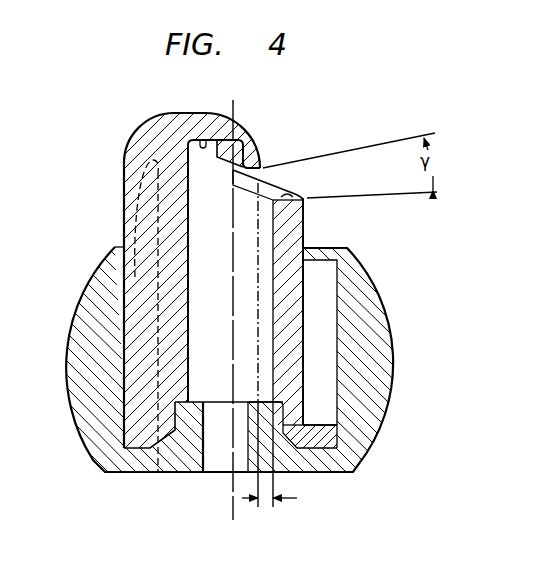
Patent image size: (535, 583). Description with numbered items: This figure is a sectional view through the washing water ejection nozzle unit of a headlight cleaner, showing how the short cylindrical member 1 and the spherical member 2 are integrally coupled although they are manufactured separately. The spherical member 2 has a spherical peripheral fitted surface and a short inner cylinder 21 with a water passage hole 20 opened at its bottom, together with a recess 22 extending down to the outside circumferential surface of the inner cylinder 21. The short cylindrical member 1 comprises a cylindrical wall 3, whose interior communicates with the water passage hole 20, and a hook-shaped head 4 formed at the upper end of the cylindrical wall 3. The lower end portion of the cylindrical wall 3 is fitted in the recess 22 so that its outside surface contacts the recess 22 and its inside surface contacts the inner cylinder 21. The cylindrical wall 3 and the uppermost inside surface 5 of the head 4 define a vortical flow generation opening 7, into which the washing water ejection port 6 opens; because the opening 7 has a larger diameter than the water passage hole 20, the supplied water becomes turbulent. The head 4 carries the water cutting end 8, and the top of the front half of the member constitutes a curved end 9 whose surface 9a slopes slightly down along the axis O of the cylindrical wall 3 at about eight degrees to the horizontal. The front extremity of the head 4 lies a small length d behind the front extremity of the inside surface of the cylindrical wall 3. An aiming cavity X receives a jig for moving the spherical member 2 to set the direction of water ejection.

The short cylindrical member 1 is at (324, 297).
The spherical member 2 is at (385, 404).
The cylindrical wall 3 is at (163, 301).
The head 4 is at (185, 113).
The uppermost inside surface 5 is at (203, 140).
The washing water ejection port 6 is at (293, 175).
The vortical flow generation opening 7 is at (203, 238).
The water cutting end 8 is at (258, 160).
The curved end 9 is at (293, 192).
The surface of the curved end 9a is at (301, 201).
The water passage hole 20 is at (212, 443).
The inner cylinder 21 is at (252, 432).
The recess 22 is at (128, 415).
The aiming cavity X is at (323, 363).
The axis O is at (232, 500).
The small length d is at (269, 466).